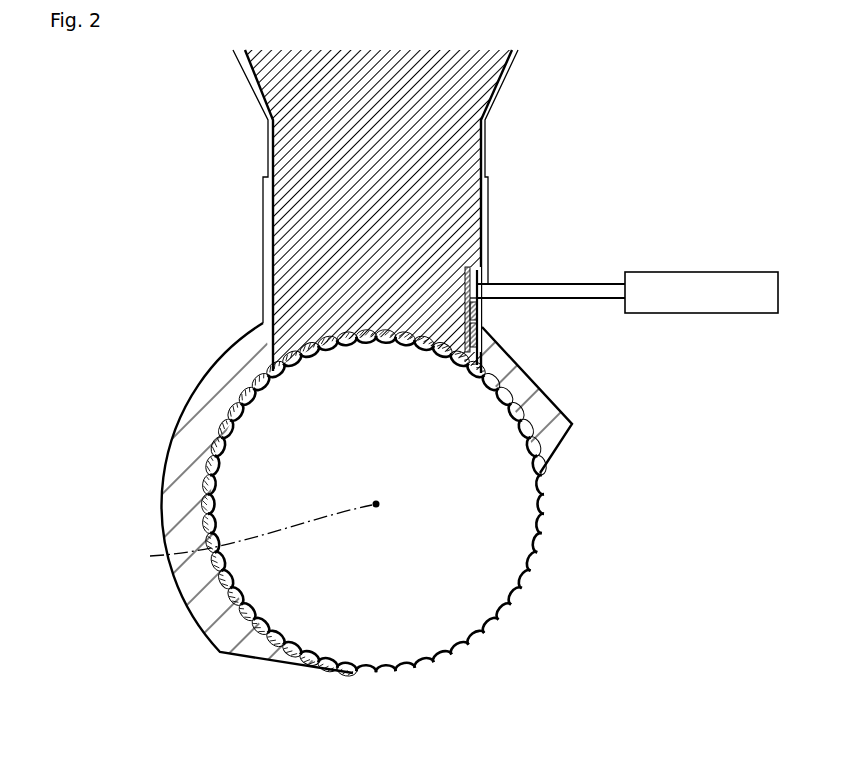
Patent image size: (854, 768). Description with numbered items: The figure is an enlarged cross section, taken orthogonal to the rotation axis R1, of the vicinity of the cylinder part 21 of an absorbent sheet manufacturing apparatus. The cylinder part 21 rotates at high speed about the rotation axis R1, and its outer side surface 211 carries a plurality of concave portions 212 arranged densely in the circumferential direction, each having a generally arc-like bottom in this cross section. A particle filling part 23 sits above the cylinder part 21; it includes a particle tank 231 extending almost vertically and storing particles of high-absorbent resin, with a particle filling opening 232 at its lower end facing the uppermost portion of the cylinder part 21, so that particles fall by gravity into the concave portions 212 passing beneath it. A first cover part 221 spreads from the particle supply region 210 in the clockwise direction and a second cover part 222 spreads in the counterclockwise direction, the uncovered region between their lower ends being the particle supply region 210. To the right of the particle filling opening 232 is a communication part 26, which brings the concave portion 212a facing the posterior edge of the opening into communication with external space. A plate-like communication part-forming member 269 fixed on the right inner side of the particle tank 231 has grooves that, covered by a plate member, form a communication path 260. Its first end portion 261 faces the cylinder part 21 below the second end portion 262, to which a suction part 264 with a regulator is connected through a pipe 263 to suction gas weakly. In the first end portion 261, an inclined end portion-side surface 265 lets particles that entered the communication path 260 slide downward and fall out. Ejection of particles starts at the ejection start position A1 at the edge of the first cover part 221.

The cylinder part 21 is at (374, 510).
The particle supply region 210 is at (374, 510).
The outer side surface 211 is at (208, 462).
The concave portion 212 is at (345, 336).
The concave portion 212a is at (553, 408).
The first cover part 221 is at (195, 418).
The second cover part 222 is at (555, 428).
The particle filling part 23 is at (330, 215).
The particle tank 231 is at (268, 210).
The particle filling opening 232 is at (381, 322).
The communication part 26 is at (621, 306).
The communication path 260 is at (480, 328).
The first end portion 261 is at (472, 352).
The second end portion 262 is at (472, 284).
The pipe 263 is at (583, 283).
The suction part 264 is at (656, 272).
The end portion-side surface 265 is at (470, 380).
The communication part-forming member 269 is at (478, 312).
The rotation axis R1 is at (251, 534).
The ejection start position A1 is at (350, 680).